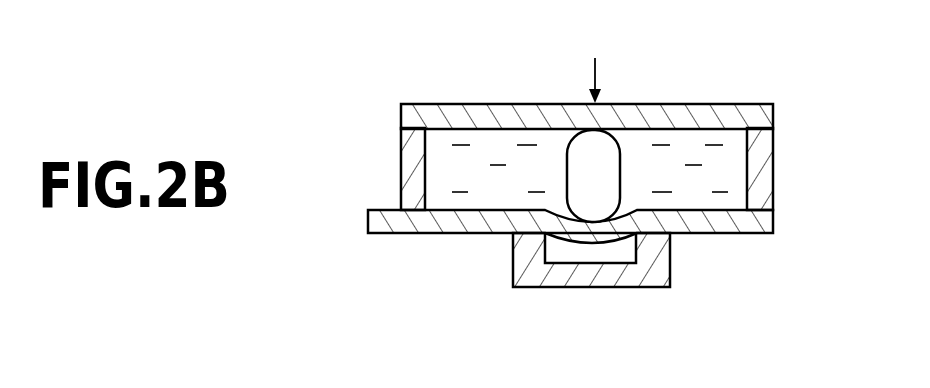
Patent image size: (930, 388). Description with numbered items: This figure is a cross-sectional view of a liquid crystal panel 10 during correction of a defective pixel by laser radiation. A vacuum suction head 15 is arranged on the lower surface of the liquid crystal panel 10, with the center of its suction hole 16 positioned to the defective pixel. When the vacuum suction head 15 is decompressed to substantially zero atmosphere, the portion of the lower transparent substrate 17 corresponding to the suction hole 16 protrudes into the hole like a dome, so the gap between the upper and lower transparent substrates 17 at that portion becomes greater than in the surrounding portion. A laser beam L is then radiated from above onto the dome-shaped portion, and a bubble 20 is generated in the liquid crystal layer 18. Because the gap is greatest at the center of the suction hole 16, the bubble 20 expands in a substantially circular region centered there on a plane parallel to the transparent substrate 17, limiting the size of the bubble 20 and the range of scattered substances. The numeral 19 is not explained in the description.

The liquid crystal panel 10 is at (412, 94).
The vacuum suction head 15 is at (543, 278).
The suction hole 16 is at (615, 252).
The transparent substrate 17 is at (731, 110).
The liquid crystal layer 18 is at (727, 177).
The light source 19 is at (678, 6).
The bubble 20 is at (569, 155).
The light beam L is at (595, 62).